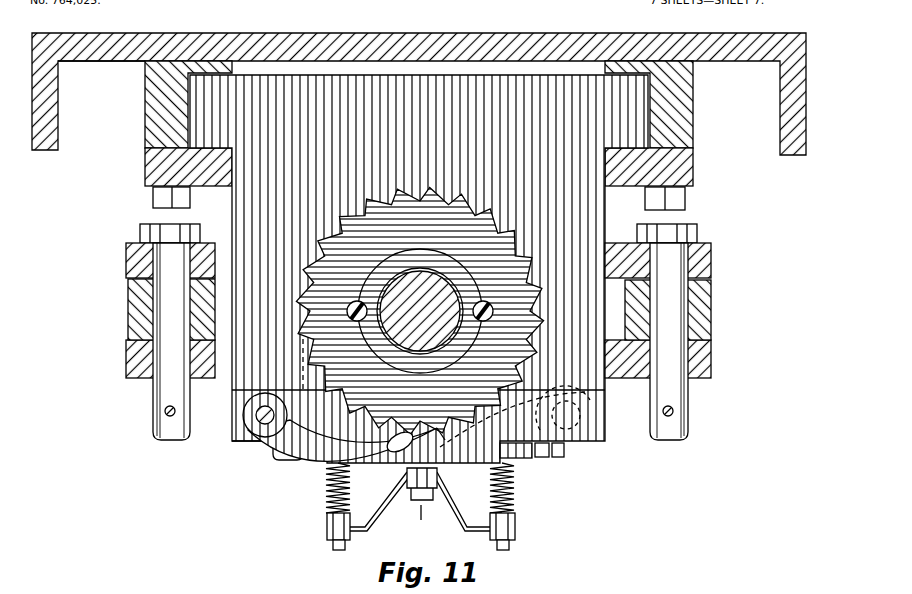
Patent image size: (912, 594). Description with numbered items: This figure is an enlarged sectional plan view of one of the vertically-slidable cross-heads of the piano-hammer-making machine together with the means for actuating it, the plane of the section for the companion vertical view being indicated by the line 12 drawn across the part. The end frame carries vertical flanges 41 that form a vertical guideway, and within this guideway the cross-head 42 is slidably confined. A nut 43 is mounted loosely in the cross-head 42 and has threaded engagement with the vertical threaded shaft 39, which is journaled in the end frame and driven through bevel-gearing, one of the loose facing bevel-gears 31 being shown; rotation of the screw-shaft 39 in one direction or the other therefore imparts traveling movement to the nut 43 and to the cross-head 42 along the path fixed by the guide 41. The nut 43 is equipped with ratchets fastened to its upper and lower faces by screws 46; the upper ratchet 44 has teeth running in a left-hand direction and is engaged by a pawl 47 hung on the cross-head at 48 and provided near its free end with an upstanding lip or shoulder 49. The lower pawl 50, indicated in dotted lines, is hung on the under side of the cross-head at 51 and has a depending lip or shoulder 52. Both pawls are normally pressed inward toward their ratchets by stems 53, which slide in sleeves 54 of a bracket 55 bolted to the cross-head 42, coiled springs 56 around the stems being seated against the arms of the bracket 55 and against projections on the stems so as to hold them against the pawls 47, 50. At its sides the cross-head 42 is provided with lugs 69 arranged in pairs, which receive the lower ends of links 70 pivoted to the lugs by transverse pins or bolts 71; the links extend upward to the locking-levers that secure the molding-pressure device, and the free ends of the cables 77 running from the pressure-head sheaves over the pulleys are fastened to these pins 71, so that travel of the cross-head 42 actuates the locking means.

The section line 12 is at (415, 52).
The bevel-gear 31 is at (134, 52).
The vertical flange 41 is at (150, 118).
The cross-head 42 is at (242, 207).
The nut 43 is at (433, 362).
The upper ratchet 44 is at (525, 298).
The vertical threaded shaft 39 is at (440, 288).
The screw 46 is at (347, 308).
The pawl 47 is at (315, 462).
The pawl pivot 48 is at (250, 414).
The lip or shoulder 49 is at (398, 450).
The pawl 50 is at (524, 460).
The pawl pivot 51 is at (576, 430).
The lip or shoulder 52 is at (447, 460).
The stem 53 is at (336, 546).
The sleeve 54 is at (327, 526).
The bracket 55 is at (384, 505).
The coiled spring 56 is at (328, 498).
The lug 69 is at (126, 261).
The link 70 is at (128, 308).
The transverse pin or bolt 71 is at (418, 313).
The cable 77 is at (165, 412).